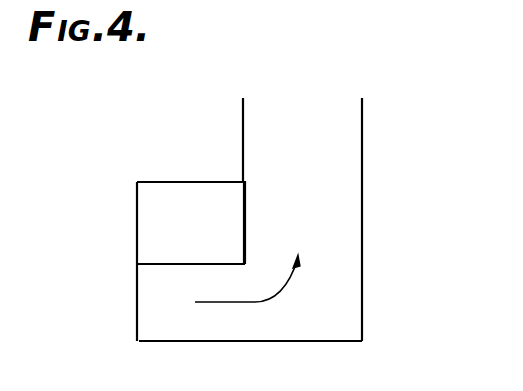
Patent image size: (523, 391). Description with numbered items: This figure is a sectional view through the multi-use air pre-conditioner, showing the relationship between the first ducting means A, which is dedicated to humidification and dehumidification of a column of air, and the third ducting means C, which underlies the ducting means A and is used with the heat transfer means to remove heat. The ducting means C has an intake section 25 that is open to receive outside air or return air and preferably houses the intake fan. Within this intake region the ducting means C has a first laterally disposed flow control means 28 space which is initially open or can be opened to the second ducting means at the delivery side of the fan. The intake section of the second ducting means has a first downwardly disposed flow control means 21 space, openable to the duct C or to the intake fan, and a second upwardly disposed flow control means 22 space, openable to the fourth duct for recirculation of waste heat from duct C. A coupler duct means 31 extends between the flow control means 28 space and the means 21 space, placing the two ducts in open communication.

The first downwardly disposed flow control means space 21 is at (329, 166).
The second upwardly disposed flow control means space 22 is at (325, 104).
The intake section 25 is at (179, 322).
The first laterally disposed flow control means space 28 is at (256, 327).
The coupler duct means 31 is at (362, 222).
The first ducting means A is at (214, 223).
The third ducting means C is at (223, 284).